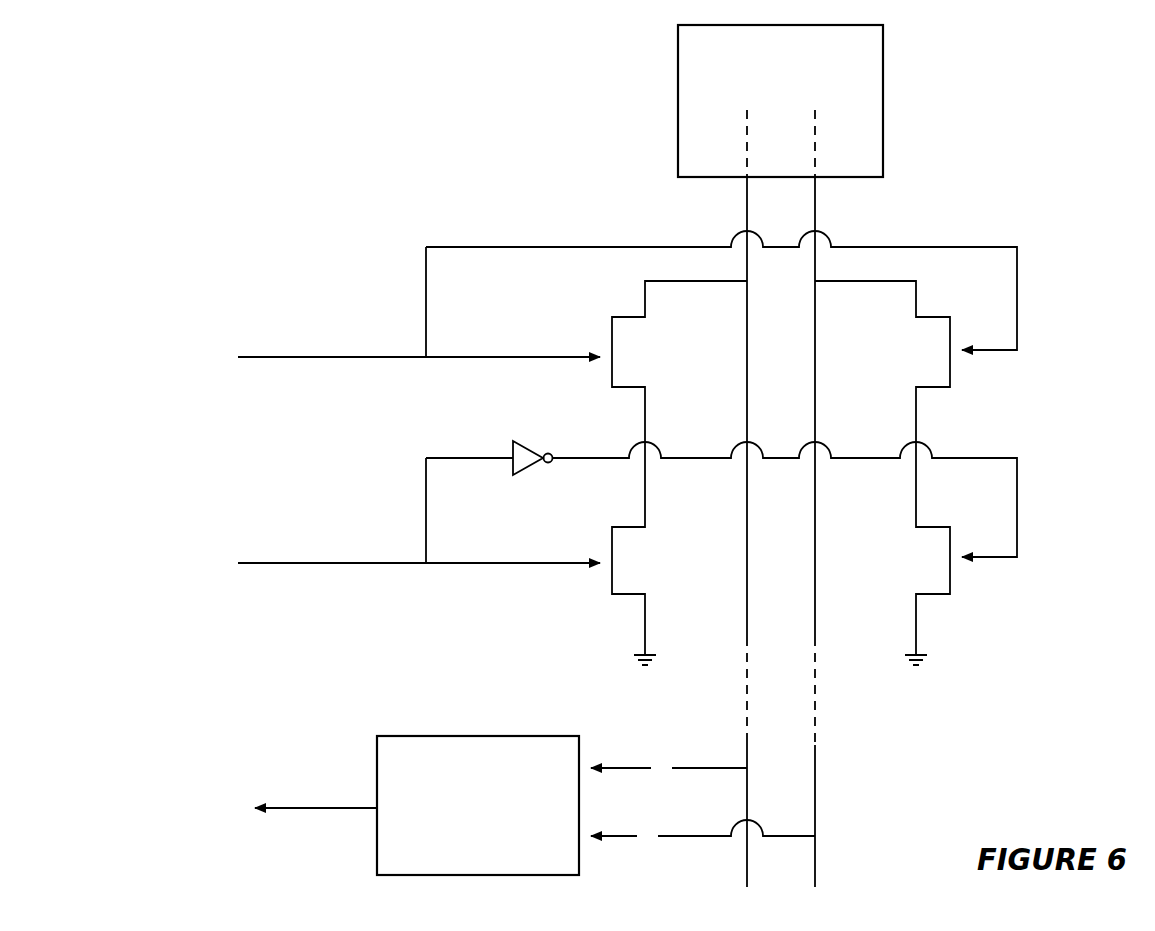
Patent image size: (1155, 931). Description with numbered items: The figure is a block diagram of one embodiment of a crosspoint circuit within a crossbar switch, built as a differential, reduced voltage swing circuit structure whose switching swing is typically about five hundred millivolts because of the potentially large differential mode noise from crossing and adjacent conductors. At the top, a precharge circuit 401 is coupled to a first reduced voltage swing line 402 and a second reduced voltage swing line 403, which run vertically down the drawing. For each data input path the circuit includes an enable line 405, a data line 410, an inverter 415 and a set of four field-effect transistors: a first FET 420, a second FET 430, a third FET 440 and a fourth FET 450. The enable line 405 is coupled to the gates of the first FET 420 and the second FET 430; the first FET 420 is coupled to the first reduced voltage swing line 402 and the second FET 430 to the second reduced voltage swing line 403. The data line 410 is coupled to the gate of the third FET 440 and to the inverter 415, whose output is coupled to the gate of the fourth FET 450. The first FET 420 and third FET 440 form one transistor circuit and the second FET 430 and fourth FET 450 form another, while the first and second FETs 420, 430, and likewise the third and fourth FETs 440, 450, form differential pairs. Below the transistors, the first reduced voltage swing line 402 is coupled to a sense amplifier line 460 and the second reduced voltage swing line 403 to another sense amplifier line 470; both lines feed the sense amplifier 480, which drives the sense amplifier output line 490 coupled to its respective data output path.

The precharge circuit 401 is at (883, 62).
The reduced voltage swing line V1 402 is at (745, 116).
The reduced voltage swing line V2 403 is at (818, 116).
The enable line 405 is at (318, 360).
The data line 410 is at (318, 570).
The inverter 415 is at (532, 449).
The FET M1 420 is at (686, 362).
The FET M2 430 is at (872, 356).
The FET M3 440 is at (686, 569).
The FET M4 450 is at (872, 563).
The sense amplifier line A 460 is at (690, 766).
The sense amplifier line B 470 is at (690, 834).
The sense amplifier 480 is at (528, 736).
The sense amplifier output line 490 is at (340, 806).